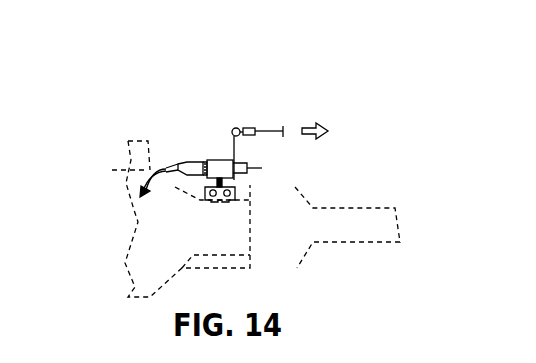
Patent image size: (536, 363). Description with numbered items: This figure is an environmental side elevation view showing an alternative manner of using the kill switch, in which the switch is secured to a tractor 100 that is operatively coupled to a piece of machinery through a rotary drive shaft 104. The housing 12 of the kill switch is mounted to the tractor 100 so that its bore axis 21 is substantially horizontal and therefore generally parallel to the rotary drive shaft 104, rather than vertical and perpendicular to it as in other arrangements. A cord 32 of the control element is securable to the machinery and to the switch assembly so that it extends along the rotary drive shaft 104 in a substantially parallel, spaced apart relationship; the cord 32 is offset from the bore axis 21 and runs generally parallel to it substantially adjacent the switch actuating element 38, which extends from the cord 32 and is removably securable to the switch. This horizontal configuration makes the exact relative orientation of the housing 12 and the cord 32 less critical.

The tractor 100 is at (130, 139).
The housing 12 is at (217, 161).
The bore axis 21 is at (112, 170).
The cord 32 is at (273, 130).
The switch actuating element 38 is at (239, 139).
The rotary drive shaft 104 is at (360, 243).